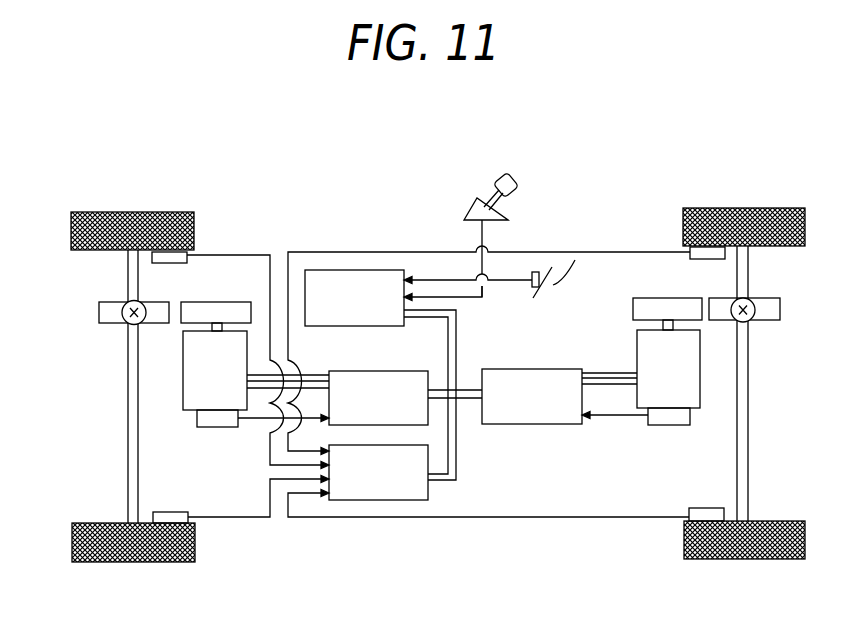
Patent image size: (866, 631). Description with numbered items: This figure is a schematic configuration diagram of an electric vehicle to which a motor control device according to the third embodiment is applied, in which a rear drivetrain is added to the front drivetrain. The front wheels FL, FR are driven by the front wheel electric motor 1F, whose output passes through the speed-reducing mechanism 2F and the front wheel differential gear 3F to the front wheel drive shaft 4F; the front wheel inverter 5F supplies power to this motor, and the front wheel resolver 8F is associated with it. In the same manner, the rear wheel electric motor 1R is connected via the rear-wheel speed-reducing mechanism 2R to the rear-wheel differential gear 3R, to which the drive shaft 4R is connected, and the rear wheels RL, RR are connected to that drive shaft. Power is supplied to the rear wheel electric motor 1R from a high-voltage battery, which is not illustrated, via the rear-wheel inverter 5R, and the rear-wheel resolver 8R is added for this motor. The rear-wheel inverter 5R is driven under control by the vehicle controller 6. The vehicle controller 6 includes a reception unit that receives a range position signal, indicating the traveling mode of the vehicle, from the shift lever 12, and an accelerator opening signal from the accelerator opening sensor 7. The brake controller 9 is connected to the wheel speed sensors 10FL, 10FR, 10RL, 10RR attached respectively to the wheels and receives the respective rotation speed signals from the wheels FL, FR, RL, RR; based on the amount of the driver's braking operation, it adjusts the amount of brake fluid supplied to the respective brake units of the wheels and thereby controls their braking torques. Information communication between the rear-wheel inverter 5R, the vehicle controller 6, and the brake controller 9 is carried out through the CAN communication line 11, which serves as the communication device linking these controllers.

The rear left wheel RL is at (102, 212).
The front left wheel FL is at (780, 208).
The rear right wheel RR is at (103, 562).
The front right wheel FR is at (730, 560).
The rear wheel electric motor 1R is at (192, 365).
The front wheel electric motor 1F is at (638, 347).
The rear-wheel speed-reducing mechanism 2R is at (195, 307).
The speed-reducing mechanism 2F is at (668, 303).
The rear-wheel differential gear 3R is at (108, 313).
The front wheel differential gear 3F is at (772, 310).
The drive shaft 4R is at (128, 388).
The front wheel drive shaft 4F is at (747, 378).
The rear-wheel inverter 5R is at (373, 378).
The front wheel inverter 5F is at (503, 376).
The vehicle controller 6 is at (333, 280).
The accelerator opening sensor 7 is at (538, 273).
The rear-wheel resolver 8R is at (213, 422).
The front wheel resolver 8F is at (667, 418).
The brake controller 9 is at (384, 487).
The wheel speed sensor 10RL is at (158, 255).
The wheel speed sensor 10FL is at (720, 253).
The wheel speed sensor 10RR is at (158, 520).
The wheel speed sensor 10FR is at (720, 517).
The CAN communication line 11 is at (456, 333).
The shift lever 12 is at (474, 208).